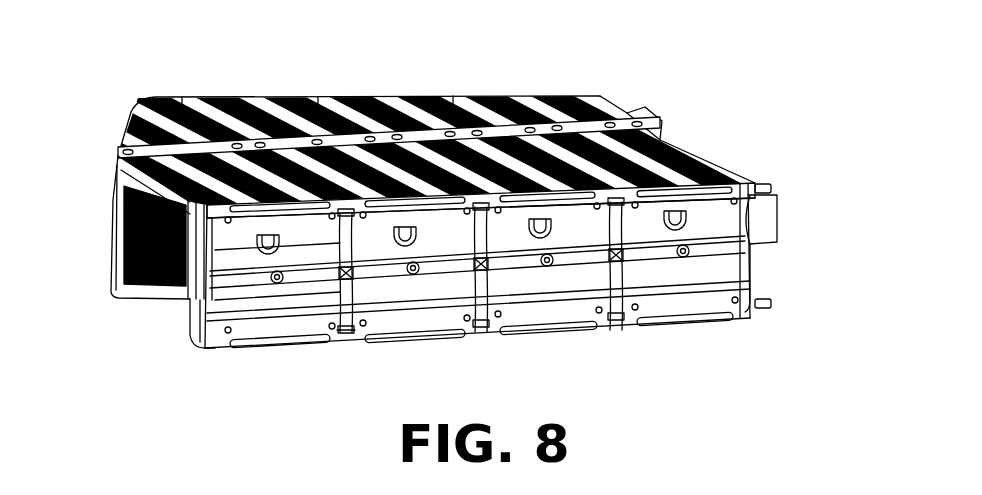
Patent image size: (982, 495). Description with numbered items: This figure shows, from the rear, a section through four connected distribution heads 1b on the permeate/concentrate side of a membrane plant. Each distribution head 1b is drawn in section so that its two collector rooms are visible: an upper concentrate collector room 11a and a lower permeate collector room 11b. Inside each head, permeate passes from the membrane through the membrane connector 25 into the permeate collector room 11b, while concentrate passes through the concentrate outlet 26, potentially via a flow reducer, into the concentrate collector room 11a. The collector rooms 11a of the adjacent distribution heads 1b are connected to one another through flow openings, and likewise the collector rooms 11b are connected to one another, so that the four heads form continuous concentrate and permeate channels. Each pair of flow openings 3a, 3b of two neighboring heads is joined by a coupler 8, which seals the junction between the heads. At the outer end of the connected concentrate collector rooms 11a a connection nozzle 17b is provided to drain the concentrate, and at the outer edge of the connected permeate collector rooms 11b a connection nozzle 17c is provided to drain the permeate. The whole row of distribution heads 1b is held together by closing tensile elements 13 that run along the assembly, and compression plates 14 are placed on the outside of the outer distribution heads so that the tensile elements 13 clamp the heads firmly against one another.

The distribution head 1b is at (273, 347).
The flow opening 3a is at (345, 233).
The flow opening 3b is at (352, 233).
The coupler 8 is at (347, 338).
The concentrate collector room 11a is at (320, 258).
The permeate collector room 11b is at (315, 307).
The closing tensile element 13 is at (770, 187).
The compression plate 14 is at (203, 265).
The connection nozzle 17b is at (763, 227).
The connection nozzle 17c is at (190, 323).
The membrane connector 25 is at (683, 258).
The concentrate outlet 26 is at (690, 213).